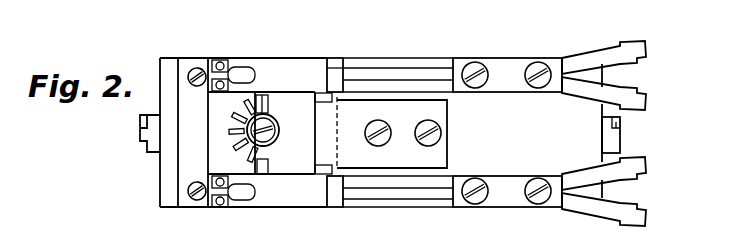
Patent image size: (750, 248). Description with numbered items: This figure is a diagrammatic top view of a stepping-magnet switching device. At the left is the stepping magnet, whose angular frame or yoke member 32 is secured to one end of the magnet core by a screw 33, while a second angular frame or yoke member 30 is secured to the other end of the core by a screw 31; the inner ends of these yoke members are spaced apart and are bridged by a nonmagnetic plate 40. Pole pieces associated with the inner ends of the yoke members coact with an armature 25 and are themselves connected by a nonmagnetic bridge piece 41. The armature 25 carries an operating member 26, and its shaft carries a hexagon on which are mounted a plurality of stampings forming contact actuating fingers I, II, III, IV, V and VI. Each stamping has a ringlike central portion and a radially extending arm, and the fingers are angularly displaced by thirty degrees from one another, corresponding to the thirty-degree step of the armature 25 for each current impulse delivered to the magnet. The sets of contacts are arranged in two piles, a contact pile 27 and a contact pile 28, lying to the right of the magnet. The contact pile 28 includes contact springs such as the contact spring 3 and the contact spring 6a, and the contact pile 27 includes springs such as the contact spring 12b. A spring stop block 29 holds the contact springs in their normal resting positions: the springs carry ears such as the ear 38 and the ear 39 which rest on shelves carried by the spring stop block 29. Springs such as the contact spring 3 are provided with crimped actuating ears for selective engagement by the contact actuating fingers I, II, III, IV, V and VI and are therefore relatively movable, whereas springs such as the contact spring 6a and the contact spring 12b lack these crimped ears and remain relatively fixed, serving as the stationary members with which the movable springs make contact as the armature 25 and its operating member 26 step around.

The contact spring 3 is at (258, 53).
The contact spring 6a is at (288, 67).
The contact spring 12b is at (312, 199).
The armature 25 is at (400, 212).
The operating member 26 is at (295, 125).
The contact pile 27 is at (510, 200).
The contact pile 28 is at (503, 70).
The spring stop block 29 is at (441, 150).
The angular frame or yoke member 30 is at (577, 161).
The screw 31 is at (622, 132).
The angular frame or yoke member 32 is at (170, 68).
The screw 33 is at (137, 134).
The ear 38 is at (320, 94).
The ear 39 is at (320, 168).
The nonmagnetic plate 40 is at (586, 202).
The nonmagnetic bridge piece 41 is at (225, 158).
The contact actuating finger I is at (268, 110).
The contact actuating finger II is at (245, 103).
The contact actuating finger III is at (231, 116).
The contact actuating finger IV is at (228, 134).
The contact actuating finger V is at (234, 150).
The contact actuating finger VI is at (268, 160).